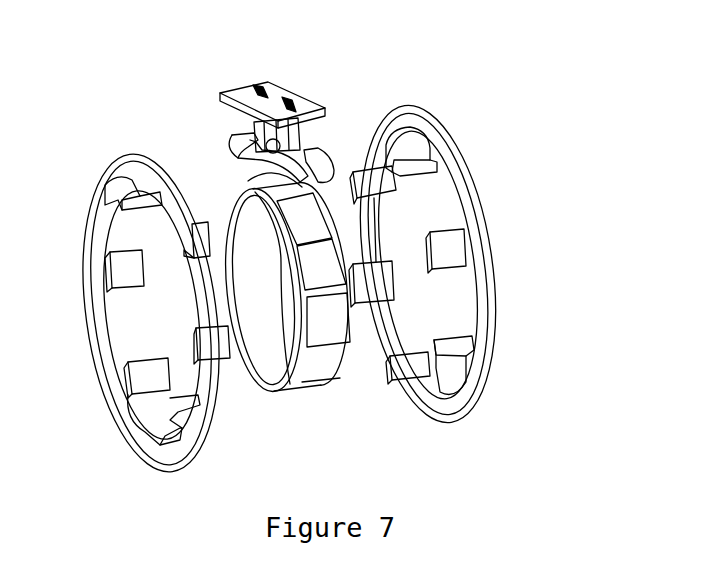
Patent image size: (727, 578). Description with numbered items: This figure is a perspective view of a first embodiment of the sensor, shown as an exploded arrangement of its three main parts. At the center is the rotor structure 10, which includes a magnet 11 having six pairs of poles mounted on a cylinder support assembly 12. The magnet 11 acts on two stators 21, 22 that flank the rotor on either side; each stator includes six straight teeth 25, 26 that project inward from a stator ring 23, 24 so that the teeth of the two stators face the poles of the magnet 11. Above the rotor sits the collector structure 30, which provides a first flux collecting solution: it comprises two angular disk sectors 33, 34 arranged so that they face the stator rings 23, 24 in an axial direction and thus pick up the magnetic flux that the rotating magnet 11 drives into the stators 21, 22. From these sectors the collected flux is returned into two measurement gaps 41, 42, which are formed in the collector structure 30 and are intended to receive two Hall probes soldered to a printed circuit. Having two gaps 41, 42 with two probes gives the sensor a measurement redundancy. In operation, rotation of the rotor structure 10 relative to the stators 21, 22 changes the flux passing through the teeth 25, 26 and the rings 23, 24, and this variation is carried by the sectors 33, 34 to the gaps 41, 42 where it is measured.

The rotor structure 10 is at (277, 328).
The magnet 11 is at (325, 370).
The cylinder support assembly 12 is at (265, 225).
The stator 21 is at (109, 270).
The stator 22 is at (464, 243).
The stator ring 23 is at (148, 448).
The stator ring 24 is at (473, 377).
The straight teeth 25 is at (146, 372).
The straight teeth 26 is at (371, 280).
The collector structure 30 is at (262, 106).
The angular disk sector 33 is at (240, 148).
The angular disk sector 34 is at (313, 151).
The measurement gap 41 is at (259, 124).
The measurement gap 42 is at (288, 130).